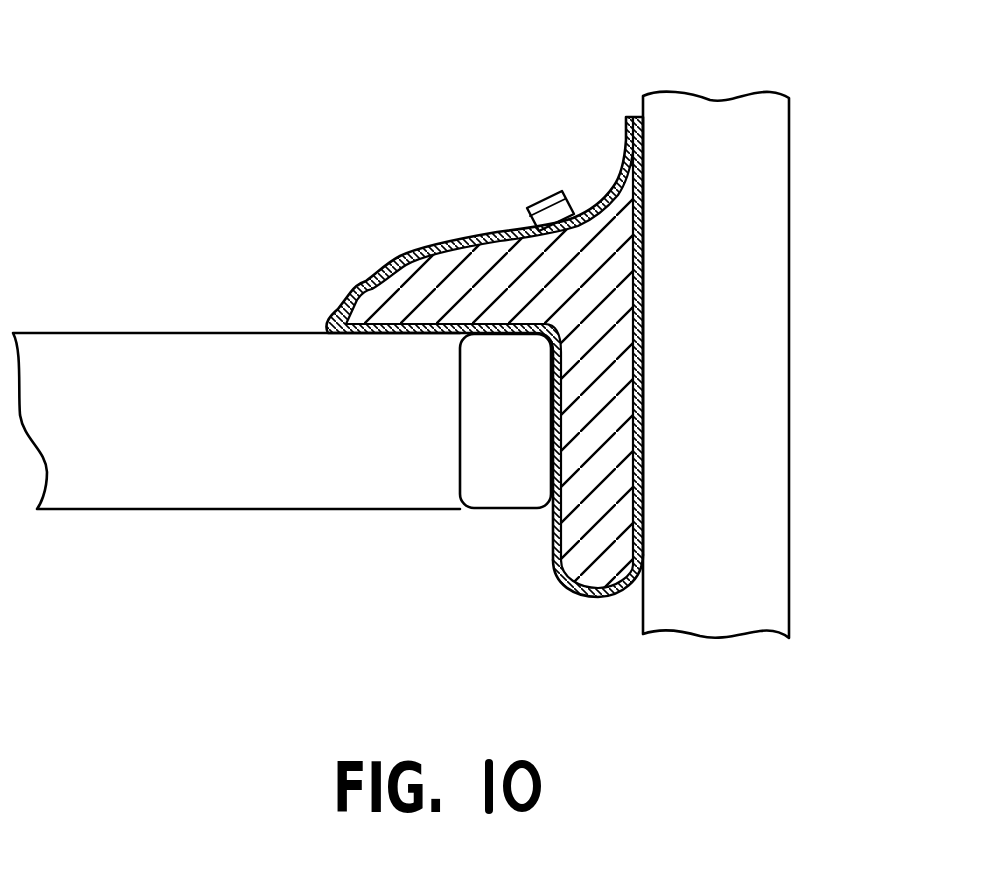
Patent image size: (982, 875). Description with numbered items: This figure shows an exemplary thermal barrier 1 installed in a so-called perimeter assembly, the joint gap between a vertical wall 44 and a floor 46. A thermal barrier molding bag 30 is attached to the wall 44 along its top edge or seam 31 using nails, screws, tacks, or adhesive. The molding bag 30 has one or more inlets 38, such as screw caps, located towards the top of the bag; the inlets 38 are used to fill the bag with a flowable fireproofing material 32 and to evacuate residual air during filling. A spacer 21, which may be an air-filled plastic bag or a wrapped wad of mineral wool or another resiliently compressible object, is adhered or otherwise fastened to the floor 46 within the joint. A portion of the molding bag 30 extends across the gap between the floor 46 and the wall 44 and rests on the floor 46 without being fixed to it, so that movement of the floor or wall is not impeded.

The weatherstrip assembly 1 is at (482, 346).
The spacer 21 is at (493, 483).
The thermal barrier molding bag 30 is at (482, 346).
The top edge or seam 31 is at (628, 103).
The flowable fireproofing material 32 is at (582, 565).
The inlet 38 is at (542, 193).
The vertical wall 44 is at (762, 345).
The floor 46 is at (167, 487).